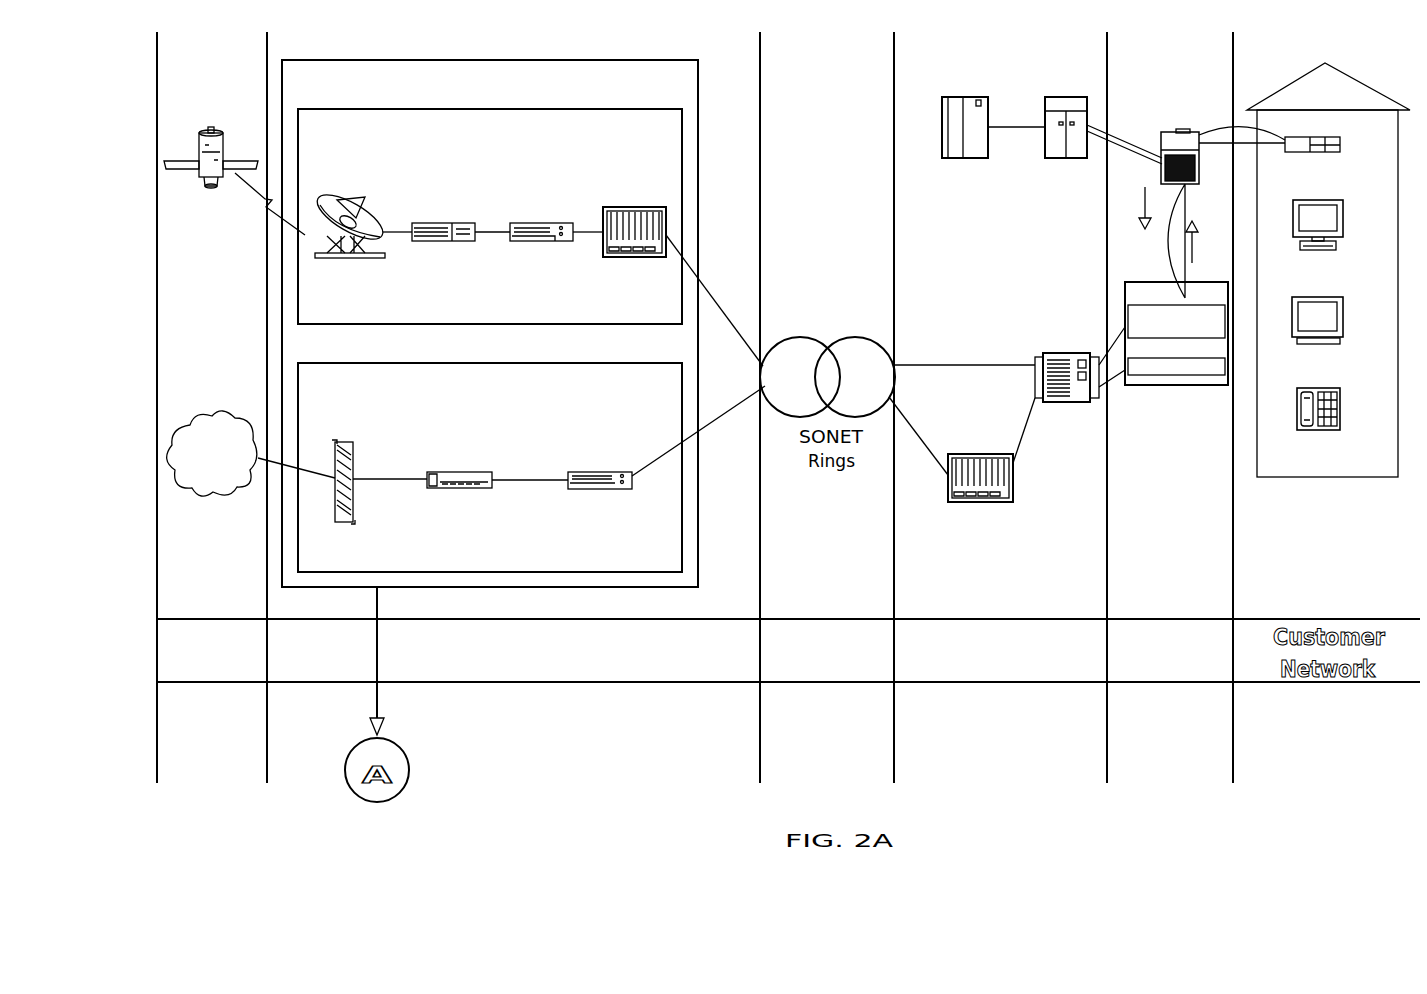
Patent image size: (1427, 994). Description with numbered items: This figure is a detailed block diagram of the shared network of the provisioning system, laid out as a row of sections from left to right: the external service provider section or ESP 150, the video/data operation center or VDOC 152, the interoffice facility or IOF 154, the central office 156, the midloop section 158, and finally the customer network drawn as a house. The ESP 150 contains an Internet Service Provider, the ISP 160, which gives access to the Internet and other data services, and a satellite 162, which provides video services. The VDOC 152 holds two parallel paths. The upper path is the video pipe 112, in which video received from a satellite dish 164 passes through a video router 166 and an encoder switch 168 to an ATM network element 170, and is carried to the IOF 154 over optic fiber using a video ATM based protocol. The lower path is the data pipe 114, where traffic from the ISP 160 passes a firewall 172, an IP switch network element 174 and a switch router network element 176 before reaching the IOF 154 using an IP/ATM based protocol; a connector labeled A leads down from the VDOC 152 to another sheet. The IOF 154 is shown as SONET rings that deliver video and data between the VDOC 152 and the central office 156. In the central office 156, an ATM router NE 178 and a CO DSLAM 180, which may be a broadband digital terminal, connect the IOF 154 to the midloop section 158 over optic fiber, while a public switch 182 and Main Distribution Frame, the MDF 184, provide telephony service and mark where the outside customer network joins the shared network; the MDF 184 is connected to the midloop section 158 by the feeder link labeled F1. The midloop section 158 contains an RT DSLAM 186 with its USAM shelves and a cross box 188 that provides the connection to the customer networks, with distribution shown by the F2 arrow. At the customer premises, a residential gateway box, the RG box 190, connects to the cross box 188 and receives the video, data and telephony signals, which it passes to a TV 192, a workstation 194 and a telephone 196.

The video pipe 112 is at (612, 108).
The data pipe 114 is at (614, 363).
The external service provider section (ESP) 150 is at (228, 608).
The video/data operation center (VDOC) 152 is at (698, 143).
The interoffice facility (IOF) 154 is at (846, 612).
The central office 156 is at (1023, 612).
The midloop section 158 is at (1181, 612).
The Internet Service Provider (ISP) 160 is at (202, 425).
The satellite 162 is at (212, 127).
The satellite dish 164 is at (358, 220).
The video router 166 is at (440, 223).
The encoder switch 168 is at (532, 223).
The ATM network element (NE) 170 is at (620, 208).
The firewall 172 is at (353, 454).
The IP switch network element 174 is at (450, 472).
The switch router network element 176 is at (580, 472).
The ATM router NE 178 is at (970, 457).
The CO DSLAM 180 is at (1052, 357).
The public switch 182 is at (955, 100).
The Main Distribution Frame (MDF) 184 is at (1055, 100).
The RT DSLAM 186 is at (1153, 386).
The cross box 188 is at (1187, 147).
The residential gateway box (RG) 190 is at (1337, 152).
The TV 192 is at (1328, 318).
The workstation 194 is at (1328, 215).
The telephone 196 is at (1330, 410).